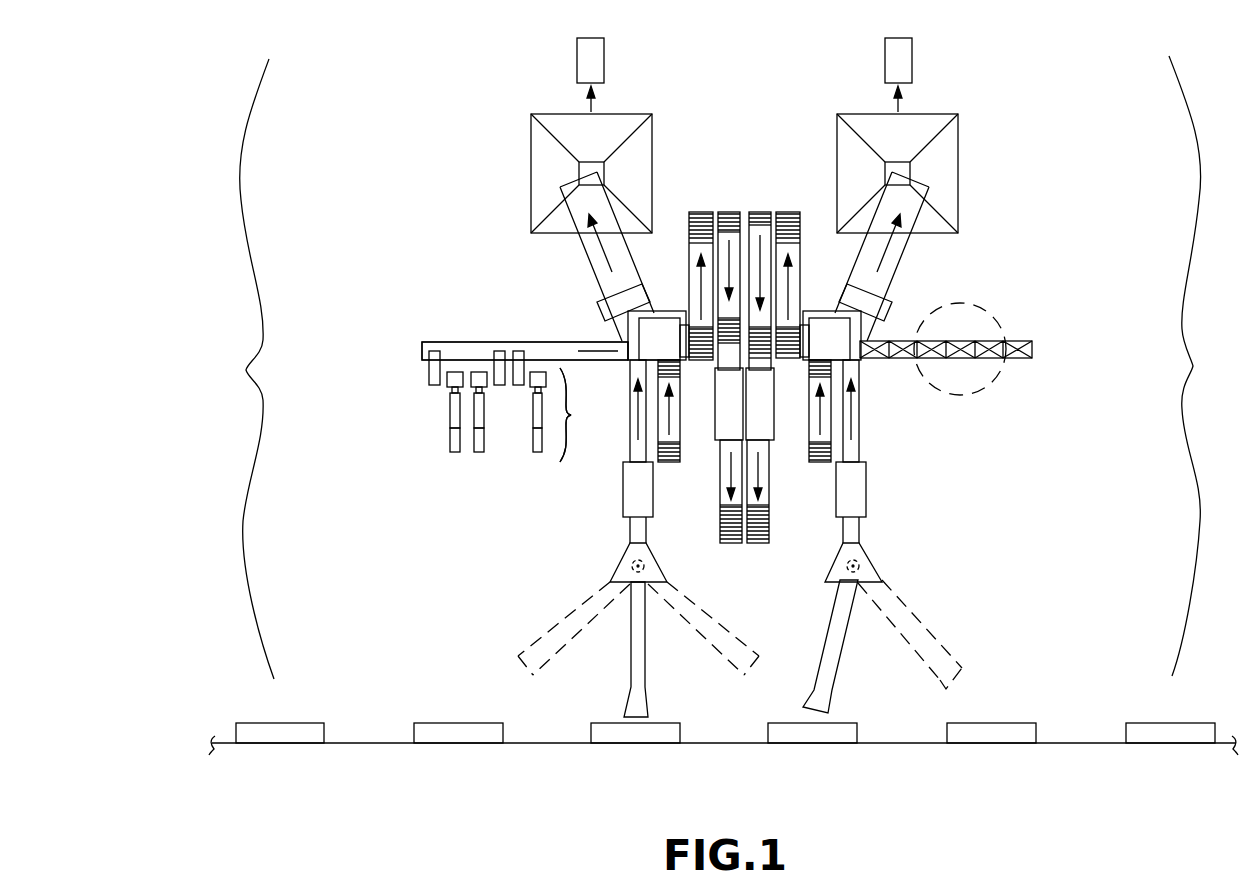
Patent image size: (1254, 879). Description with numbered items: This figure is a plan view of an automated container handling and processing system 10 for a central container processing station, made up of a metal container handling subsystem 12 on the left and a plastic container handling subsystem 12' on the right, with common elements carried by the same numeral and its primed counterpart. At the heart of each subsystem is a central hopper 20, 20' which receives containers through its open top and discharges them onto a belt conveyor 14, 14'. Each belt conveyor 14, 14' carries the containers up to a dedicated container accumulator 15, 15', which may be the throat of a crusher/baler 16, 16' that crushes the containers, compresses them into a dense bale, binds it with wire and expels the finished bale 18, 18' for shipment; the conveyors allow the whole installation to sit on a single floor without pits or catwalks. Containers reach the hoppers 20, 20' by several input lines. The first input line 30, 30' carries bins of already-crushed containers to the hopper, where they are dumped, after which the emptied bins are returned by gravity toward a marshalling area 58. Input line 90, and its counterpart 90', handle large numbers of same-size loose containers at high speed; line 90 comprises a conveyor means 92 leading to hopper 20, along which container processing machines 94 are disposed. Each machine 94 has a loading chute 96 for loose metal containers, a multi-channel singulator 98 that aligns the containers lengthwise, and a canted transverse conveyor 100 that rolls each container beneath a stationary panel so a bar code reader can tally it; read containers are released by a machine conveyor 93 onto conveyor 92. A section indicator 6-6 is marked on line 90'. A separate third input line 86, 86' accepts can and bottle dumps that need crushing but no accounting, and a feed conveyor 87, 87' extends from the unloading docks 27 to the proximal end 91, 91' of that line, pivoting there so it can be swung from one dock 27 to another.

The automated container handling and processing system 10 is at (1139, 131).
The metal container handling subsystem 12 is at (234, 369).
The plastic container handling subsystem 12' is at (1205, 366).
The belt conveyor 14 is at (582, 256).
The belt conveyor 14' is at (910, 256).
The container accumulator 15 is at (641, 162).
The container accumulator 15' is at (954, 153).
The crusher/baler 16 is at (563, 173).
The crusher/baler 16' is at (935, 173).
The bale 18 is at (619, 72).
The bale 18' is at (866, 73).
The central hopper 20 is at (611, 326).
The central hopper 20' is at (872, 322).
The unloading docks 27 is at (307, 739).
The first input line 30 is at (682, 428).
The first input line 30' is at (811, 431).
The marshalling area 58 is at (771, 601).
The section line 6-6 is at (1000, 373).
The third input line 86 is at (604, 451).
The third input line 86' is at (889, 451).
The feed conveyor 87 is at (638, 649).
The feed conveyor 87' is at (882, 646).
The input line 90 is at (503, 380).
The input line 90' is at (960, 317).
The proximal end 91 is at (612, 562).
The proximal end 91' is at (881, 561).
The conveyor means 92 is at (458, 350).
The machine conveyor 93 is at (429, 370).
The container processing machines 94 is at (525, 415).
The loading chute 96 is at (533, 450).
The multi-channel singulator 98 is at (533, 418).
The canted transverse conveyor 100 is at (530, 387).